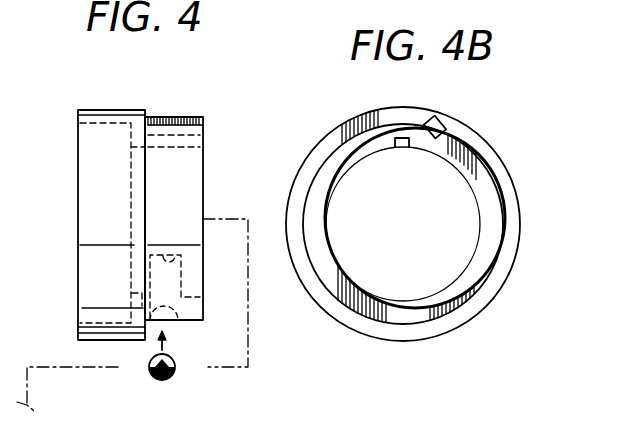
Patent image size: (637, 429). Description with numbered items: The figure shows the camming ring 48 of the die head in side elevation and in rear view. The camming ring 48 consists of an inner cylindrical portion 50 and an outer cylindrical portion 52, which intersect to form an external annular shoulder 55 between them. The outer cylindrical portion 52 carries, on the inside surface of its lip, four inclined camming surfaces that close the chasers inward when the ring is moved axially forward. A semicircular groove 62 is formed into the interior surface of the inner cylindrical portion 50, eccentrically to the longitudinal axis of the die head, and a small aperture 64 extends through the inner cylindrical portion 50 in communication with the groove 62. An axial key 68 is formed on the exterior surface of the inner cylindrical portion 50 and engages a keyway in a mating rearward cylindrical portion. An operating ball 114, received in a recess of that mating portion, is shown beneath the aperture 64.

In FIG. 4, the camming ring 48 is at (78, 272).
In FIG. 4B, the camming ring 48 is at (507, 278).
In FIG. 4, the inner cylindrical portion 50 is at (181, 176).
In FIG. 4B, the inner cylindrical portion 50 is at (487, 227).
In FIG. 4, the outer cylindrical portion 52 is at (98, 112).
In FIG. 4B, the outer cylindrical portion 52 is at (328, 135).
In FIG. 4, the external annular shoulder 55 is at (152, 180).
In FIG. 4B, the external annular shoulder 55 is at (398, 333).
In FIG. 4, the semicircular groove 62 is at (162, 254).
In FIG. 4, the small aperture 64 is at (176, 322).
In FIG. 4, the axial key 68 is at (170, 118).
In FIG. 4B, the axial key 68 is at (444, 121).
In FIG. 4, the operating ball 114 is at (176, 368).